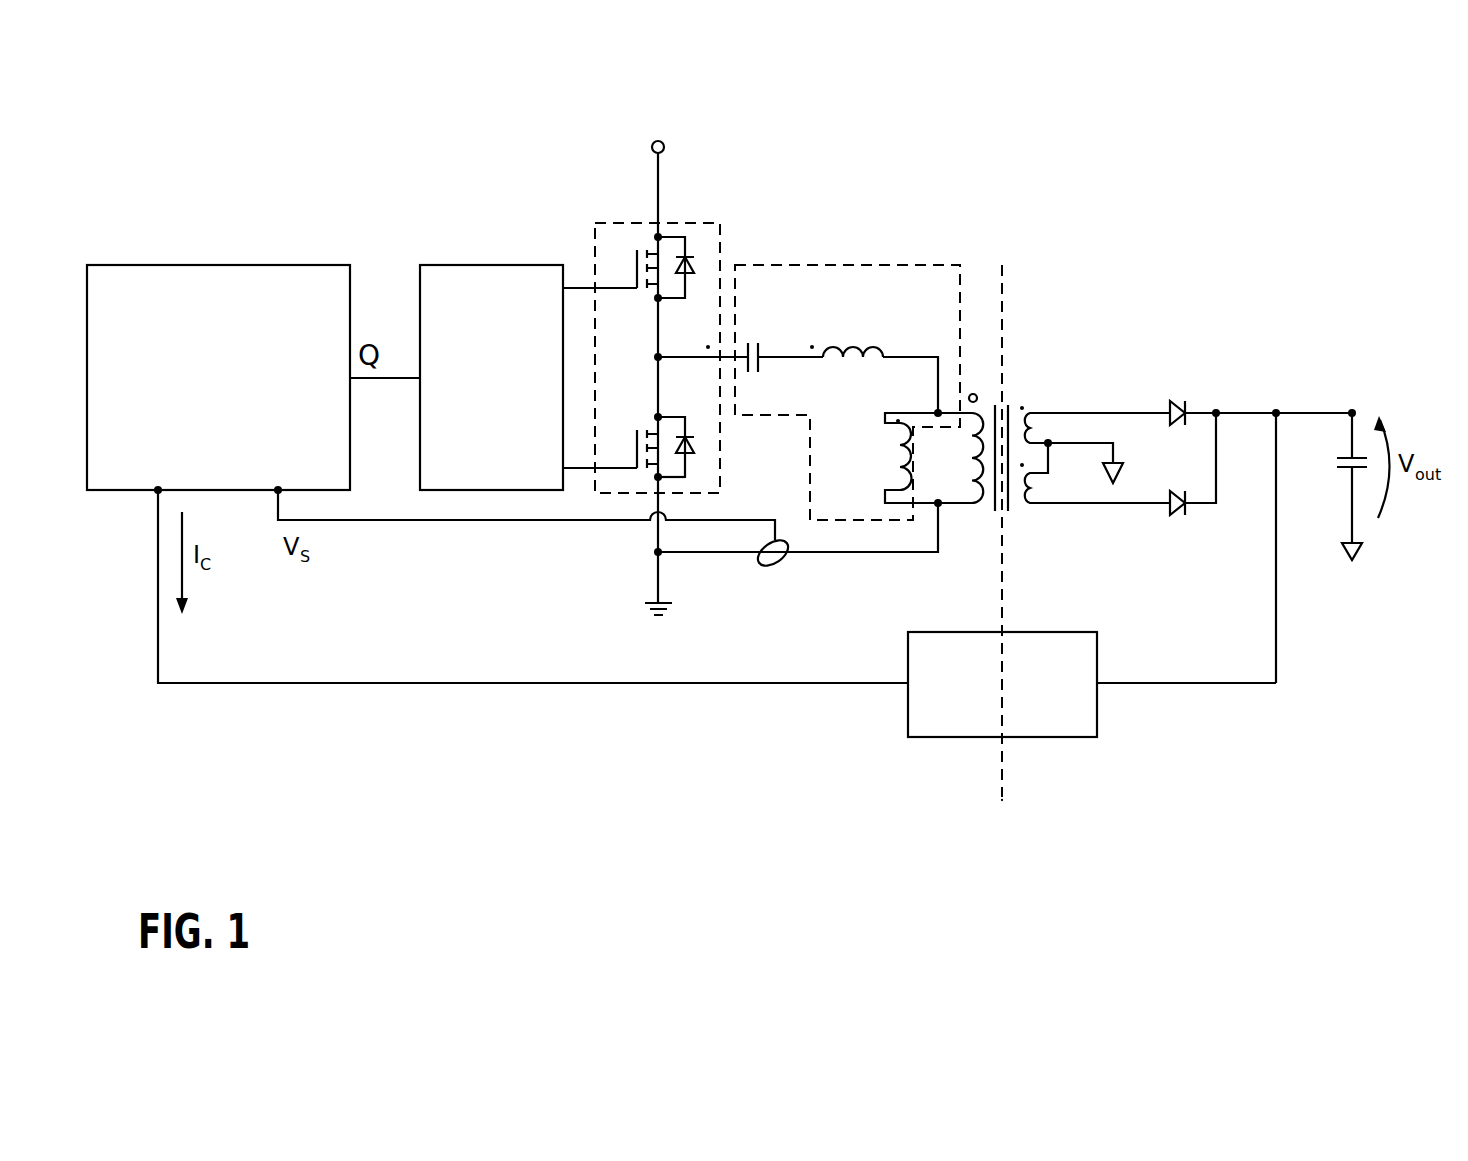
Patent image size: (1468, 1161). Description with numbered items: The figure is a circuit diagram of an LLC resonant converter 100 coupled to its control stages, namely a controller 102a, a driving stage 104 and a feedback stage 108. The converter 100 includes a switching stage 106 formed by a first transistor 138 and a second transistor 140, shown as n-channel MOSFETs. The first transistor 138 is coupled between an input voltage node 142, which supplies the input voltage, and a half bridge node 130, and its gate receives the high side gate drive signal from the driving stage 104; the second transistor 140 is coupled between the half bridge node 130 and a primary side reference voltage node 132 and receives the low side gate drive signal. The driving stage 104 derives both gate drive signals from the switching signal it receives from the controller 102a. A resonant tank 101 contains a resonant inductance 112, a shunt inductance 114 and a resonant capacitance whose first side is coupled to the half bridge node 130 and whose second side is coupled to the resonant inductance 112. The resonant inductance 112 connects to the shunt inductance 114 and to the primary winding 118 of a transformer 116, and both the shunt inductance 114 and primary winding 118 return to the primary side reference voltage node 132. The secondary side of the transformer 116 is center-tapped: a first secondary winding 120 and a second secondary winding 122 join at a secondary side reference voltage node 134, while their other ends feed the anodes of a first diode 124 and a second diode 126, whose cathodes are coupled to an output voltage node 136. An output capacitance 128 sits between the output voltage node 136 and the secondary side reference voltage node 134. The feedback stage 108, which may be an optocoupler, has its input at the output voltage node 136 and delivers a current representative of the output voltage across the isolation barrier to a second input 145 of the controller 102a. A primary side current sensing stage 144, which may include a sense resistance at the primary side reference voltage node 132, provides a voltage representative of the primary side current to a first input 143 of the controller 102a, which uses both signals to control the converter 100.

The LLC resonant converter 100 is at (1137, 170).
The resonant tank 101 is at (862, 265).
The controller 102a is at (225, 265).
The driving stage 104 is at (478, 265).
The switching stage 106 is at (700, 222).
The feedback stage 108 is at (1100, 642).
The resonant inductance 112 is at (888, 348).
The shunt inductance 114 is at (895, 445).
The transformer 116 is at (1016, 370).
The primary winding 118 is at (972, 503).
The first secondary winding 120 is at (1025, 420).
The second secondary winding 122 is at (1030, 500).
The first diode 124 is at (1178, 403).
The second diode 126 is at (1183, 518).
The output capacitance 128 is at (1340, 470).
The half bridge node 130 is at (660, 417).
The primary side reference voltage node 132 is at (662, 555).
The secondary side reference voltage node 134 is at (1118, 475).
The output voltage node 136 is at (1352, 410).
The first transistor 138 is at (685, 300).
The second transistor 140 is at (685, 480).
The input voltage node 142 is at (652, 143).
The first input 143 is at (277, 492).
The primary side current sensing stage 144 is at (780, 562).
The second input 145 is at (157, 492).